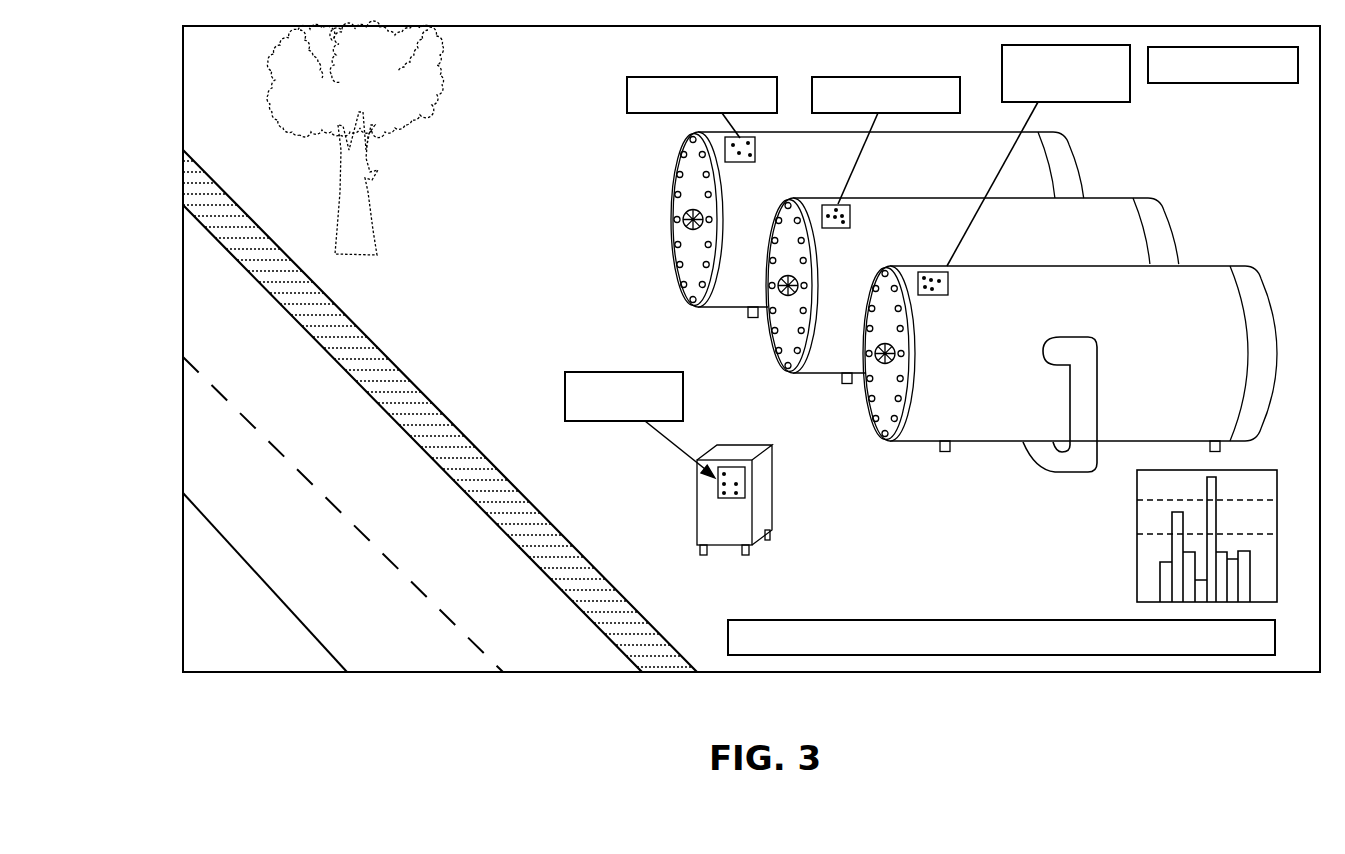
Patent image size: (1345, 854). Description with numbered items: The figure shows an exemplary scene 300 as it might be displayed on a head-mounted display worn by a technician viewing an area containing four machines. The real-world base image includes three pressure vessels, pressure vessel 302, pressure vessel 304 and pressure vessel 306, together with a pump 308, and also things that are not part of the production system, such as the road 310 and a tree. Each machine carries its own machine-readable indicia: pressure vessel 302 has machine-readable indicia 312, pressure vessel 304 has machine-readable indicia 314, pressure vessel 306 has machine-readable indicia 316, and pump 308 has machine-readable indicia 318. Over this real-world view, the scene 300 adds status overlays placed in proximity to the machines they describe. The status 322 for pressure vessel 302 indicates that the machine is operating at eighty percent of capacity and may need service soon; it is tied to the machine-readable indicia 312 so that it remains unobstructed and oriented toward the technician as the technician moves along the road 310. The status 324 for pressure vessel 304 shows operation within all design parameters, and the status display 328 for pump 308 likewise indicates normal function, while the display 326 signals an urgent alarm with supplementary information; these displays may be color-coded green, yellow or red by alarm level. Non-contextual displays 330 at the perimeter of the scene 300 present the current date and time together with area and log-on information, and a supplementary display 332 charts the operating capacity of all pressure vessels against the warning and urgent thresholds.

The scene 300 is at (518, 176).
The pressure vessel 302 is at (1037, 175).
The pressure vessel 304 is at (1130, 228).
The pressure vessel 306 is at (1225, 297).
The pump 308 is at (745, 523).
The road 310 is at (292, 345).
The machine-readable indicia 312 is at (758, 150).
The machine-readable indicia 314 is at (853, 217).
The machine-readable indicia 316 is at (951, 282).
The machine-readable indicia 318 is at (750, 478).
The status 322 is at (729, 77).
The status 324 is at (864, 77).
The display 326 is at (1002, 68).
The status display 328 is at (575, 371).
The non-contextual displays 330 is at (1246, 84).
The supplementary display 332 is at (1135, 540).